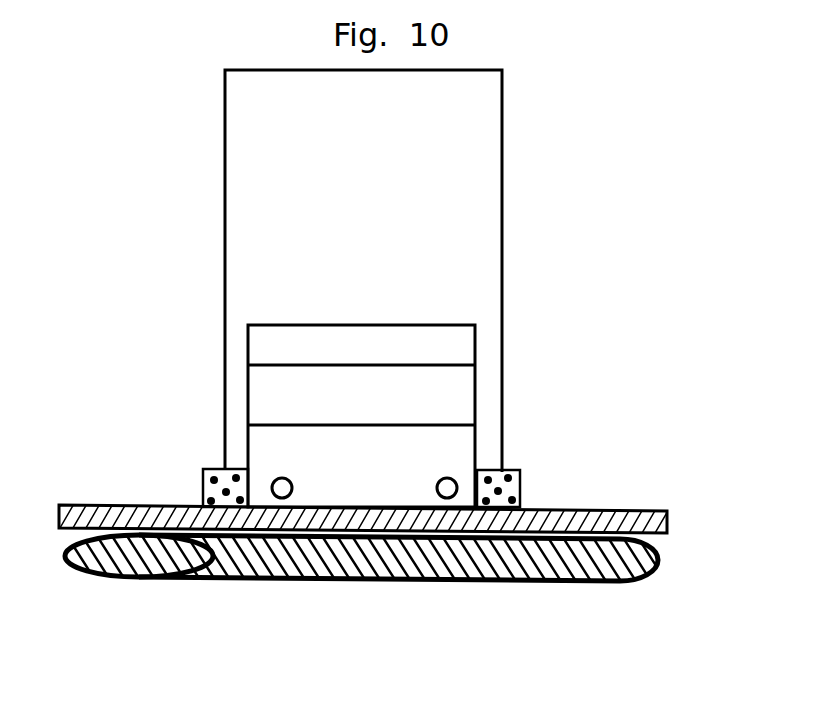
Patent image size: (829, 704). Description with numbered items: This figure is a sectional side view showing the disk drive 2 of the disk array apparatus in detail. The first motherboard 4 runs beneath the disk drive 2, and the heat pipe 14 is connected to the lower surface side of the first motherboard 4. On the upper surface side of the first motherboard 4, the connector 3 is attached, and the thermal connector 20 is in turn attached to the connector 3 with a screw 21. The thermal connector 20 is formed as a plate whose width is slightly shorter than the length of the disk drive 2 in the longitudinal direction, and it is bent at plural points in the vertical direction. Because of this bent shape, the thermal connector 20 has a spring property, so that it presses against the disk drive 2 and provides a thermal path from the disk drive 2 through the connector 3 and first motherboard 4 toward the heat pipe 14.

The disk drive 2 is at (460, 257).
The connector 3 is at (505, 470).
The first motherboard 4 is at (665, 533).
The heat pipe 14 is at (270, 580).
The thermal connector 20 is at (285, 402).
The screw 21 is at (273, 482).